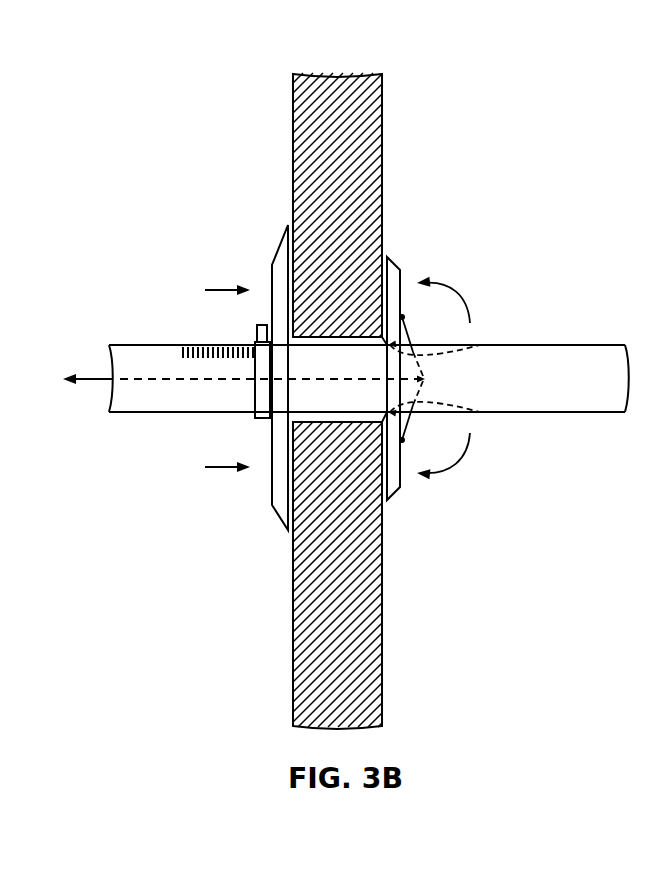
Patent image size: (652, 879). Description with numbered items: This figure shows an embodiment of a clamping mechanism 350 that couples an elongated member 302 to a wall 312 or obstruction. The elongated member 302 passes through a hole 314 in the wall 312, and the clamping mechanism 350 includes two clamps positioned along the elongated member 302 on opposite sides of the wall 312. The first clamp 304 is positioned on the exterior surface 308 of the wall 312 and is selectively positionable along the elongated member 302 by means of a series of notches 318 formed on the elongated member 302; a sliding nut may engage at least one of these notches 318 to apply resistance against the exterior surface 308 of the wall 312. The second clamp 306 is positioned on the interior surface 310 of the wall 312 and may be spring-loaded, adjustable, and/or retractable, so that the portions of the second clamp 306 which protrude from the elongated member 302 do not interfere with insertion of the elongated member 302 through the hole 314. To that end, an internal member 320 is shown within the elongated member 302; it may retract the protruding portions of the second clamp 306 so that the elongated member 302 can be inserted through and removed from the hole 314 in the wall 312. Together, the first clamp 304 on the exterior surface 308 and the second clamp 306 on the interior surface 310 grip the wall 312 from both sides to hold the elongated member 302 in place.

The elongated member 302 is at (346, 378).
The first clamp 304 is at (283, 245).
The second clamp 306 is at (390, 257).
The exterior surface 308 is at (293, 610).
The interior surface 310 is at (382, 570).
The wall 312 is at (337, 205).
The hole 314 is at (349, 333).
The notches 318 is at (232, 332).
The internal member 320 is at (172, 379).
The clamping mechanism 350 is at (516, 193).